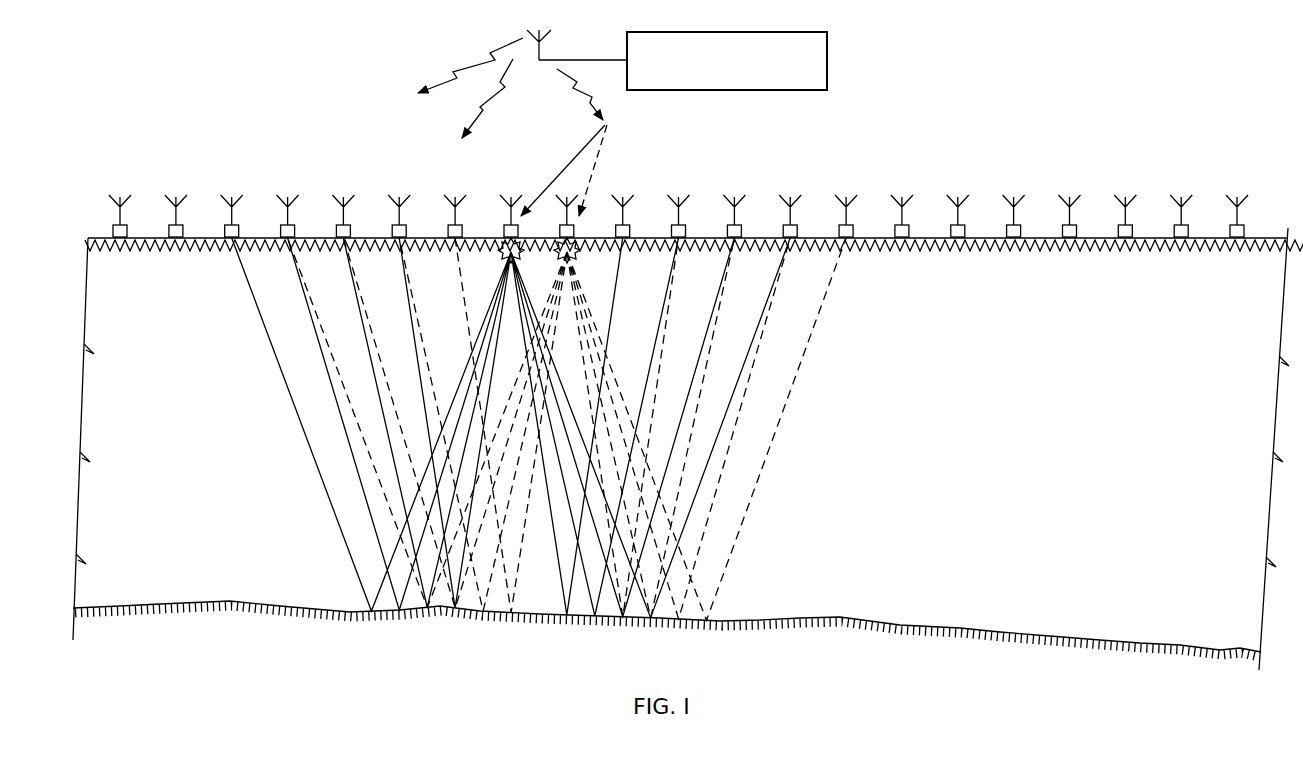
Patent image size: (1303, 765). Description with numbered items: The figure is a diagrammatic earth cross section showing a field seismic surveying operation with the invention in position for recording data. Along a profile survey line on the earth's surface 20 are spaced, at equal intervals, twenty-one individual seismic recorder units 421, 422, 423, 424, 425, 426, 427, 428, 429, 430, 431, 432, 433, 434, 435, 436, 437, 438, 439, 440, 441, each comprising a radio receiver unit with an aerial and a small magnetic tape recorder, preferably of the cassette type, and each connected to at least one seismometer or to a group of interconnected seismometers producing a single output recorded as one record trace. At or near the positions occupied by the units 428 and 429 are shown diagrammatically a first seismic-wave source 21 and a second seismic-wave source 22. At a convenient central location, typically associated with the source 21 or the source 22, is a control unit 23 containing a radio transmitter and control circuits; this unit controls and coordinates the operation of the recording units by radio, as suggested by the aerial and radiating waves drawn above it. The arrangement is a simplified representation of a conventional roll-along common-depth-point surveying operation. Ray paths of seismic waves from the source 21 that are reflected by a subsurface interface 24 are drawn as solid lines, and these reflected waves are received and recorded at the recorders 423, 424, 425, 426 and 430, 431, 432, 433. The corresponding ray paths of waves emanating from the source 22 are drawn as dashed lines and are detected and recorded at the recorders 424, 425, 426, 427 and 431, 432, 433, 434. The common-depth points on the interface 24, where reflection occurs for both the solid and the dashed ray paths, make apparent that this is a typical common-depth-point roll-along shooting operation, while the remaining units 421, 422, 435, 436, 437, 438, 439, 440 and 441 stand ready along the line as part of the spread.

The earth's surface 20 is at (880, 240).
The first seismic-wave source 21 is at (500, 258).
The second seismic-wave source 22 is at (581, 262).
The control unit 23 is at (768, 90).
The subsurface interface 24 is at (796, 614).
The seismic recorder unit 421 is at (120, 207).
The seismic recorder unit 422 is at (176, 207).
The seismic recorder unit 423 is at (231, 207).
The seismic recorder unit 424 is at (287, 207).
The seismic recorder unit 425 is at (343, 207).
The seismic recorder unit 426 is at (399, 207).
The seismic recorder unit 427 is at (455, 207).
The seismic recorder unit 428 is at (511, 207).
The seismic recorder unit 429 is at (567, 207).
The seismic recorder unit 430 is at (622, 207).
The seismic recorder unit 431 is at (678, 207).
The seismic recorder unit 432 is at (734, 207).
The seismic recorder unit 433 is at (790, 207).
The seismic recorder unit 434 is at (846, 207).
The seismic recorder unit 435 is at (902, 207).
The seismic recorder unit 436 is at (958, 207).
The seismic recorder unit 437 is at (1013, 207).
The seismic recorder unit 438 is at (1069, 207).
The seismic recorder unit 439 is at (1125, 207).
The seismic recorder unit 440 is at (1181, 207).
The seismic recorder unit 441 is at (1237, 207).